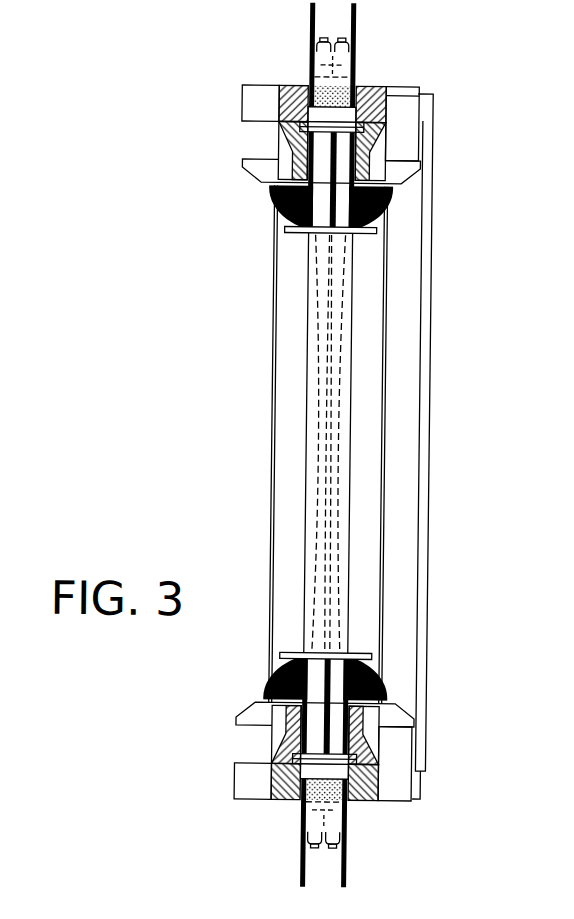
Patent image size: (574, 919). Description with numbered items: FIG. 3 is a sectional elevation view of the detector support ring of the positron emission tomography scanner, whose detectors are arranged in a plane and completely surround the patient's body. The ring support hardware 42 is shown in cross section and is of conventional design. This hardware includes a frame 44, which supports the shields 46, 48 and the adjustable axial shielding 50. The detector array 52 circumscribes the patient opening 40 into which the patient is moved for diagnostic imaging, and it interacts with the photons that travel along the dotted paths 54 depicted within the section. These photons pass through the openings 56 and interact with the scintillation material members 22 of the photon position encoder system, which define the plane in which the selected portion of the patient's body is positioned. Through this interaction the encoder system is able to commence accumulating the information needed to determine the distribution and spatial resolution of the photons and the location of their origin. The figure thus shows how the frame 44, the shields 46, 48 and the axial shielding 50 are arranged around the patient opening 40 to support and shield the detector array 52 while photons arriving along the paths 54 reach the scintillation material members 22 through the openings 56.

The scintillation material members 22 is at (305, 803).
The patient opening 40 is at (290, 319).
The ring support hardware 42 is at (240, 138).
The frame 44 is at (428, 412).
The shield 46 is at (369, 86).
The shield 48 is at (362, 147).
The adjustable axial shielding 50 is at (387, 196).
The detector array 52 is at (343, 832).
The dotted paths 54 is at (309, 346).
The openings 56 is at (338, 644).